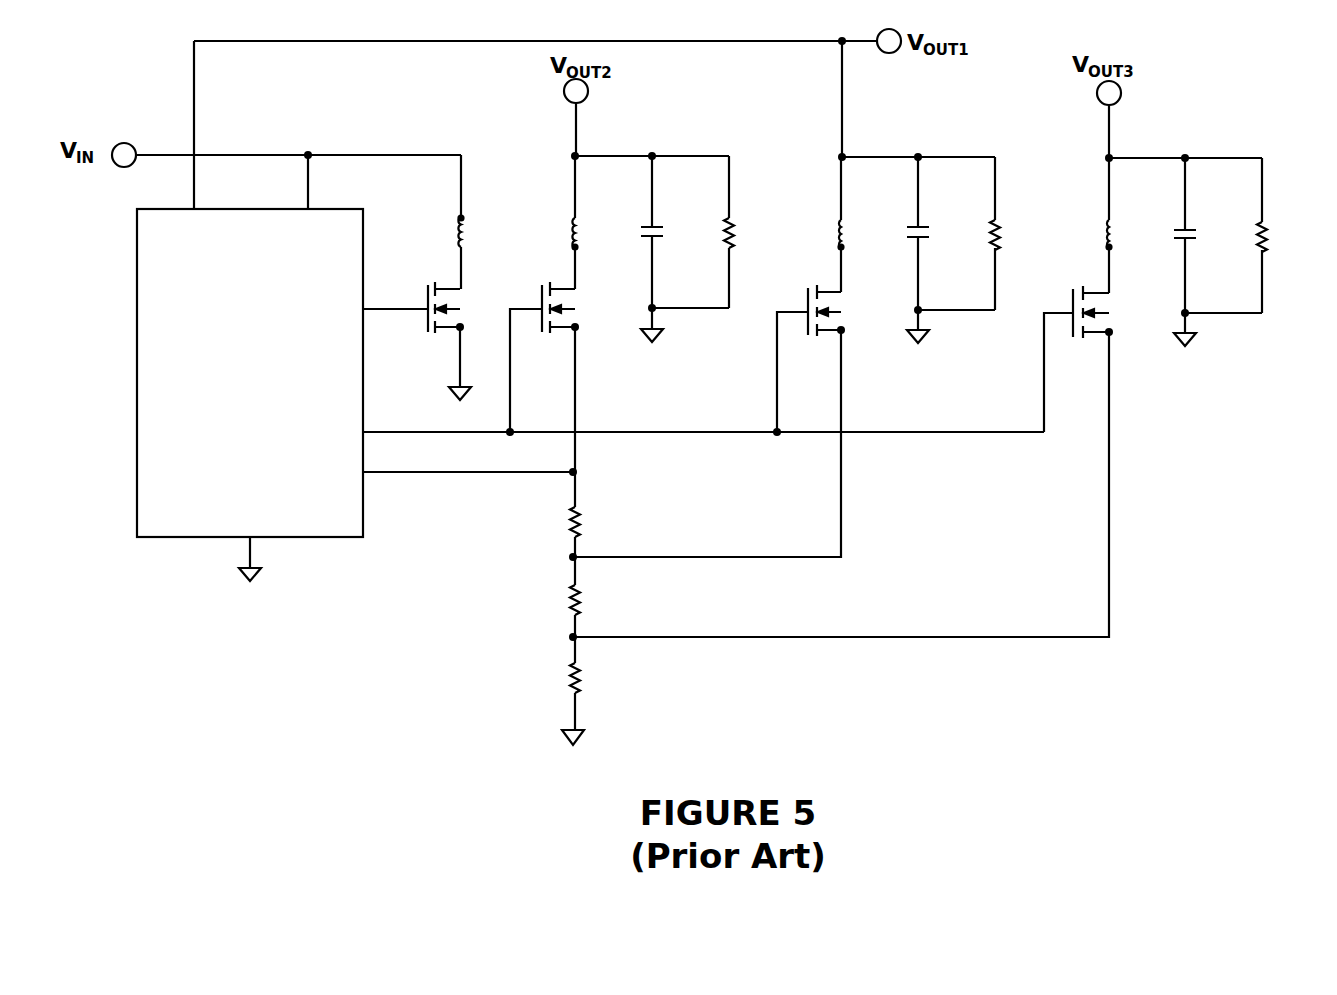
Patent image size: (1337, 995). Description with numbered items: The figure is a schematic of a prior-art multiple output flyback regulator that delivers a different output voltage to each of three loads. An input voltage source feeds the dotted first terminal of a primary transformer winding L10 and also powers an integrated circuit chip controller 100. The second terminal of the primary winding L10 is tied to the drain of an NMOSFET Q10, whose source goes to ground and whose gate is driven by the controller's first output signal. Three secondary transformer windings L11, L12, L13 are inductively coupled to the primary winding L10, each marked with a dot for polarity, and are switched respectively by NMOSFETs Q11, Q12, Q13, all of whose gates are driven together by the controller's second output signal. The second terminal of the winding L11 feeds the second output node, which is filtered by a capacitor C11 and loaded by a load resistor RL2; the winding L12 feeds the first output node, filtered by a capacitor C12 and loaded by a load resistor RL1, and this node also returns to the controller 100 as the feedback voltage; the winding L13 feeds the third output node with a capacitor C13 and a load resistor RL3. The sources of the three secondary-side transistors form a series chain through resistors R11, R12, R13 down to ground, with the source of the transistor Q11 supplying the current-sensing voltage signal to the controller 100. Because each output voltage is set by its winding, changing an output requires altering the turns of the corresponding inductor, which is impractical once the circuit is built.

The integrated circuit chip controller 100 is at (250, 373).
The NMOSFET Q10 is at (421, 294).
The NMOSFET Q11 is at (537, 294).
The NMOSFET Q12 is at (808, 297).
The NMOSFET Q13 is at (1075, 298).
The primary transformer winding L10 is at (485, 232).
The secondary transformer winding L11 is at (599, 234).
The secondary transformer winding L12 is at (867, 235).
The secondary transformer winding L13 is at (1135, 235).
The capacitor C11 is at (679, 232).
The capacitor C12 is at (943, 232).
The capacitor C13 is at (1212, 237).
The load resistor RL1 is at (1020, 235).
The load resistor RL2 is at (754, 233).
The load resistor RL3 is at (1287, 237).
The resistor R11 is at (603, 522).
The resistor R12 is at (603, 600).
The resistor R13 is at (603, 678).